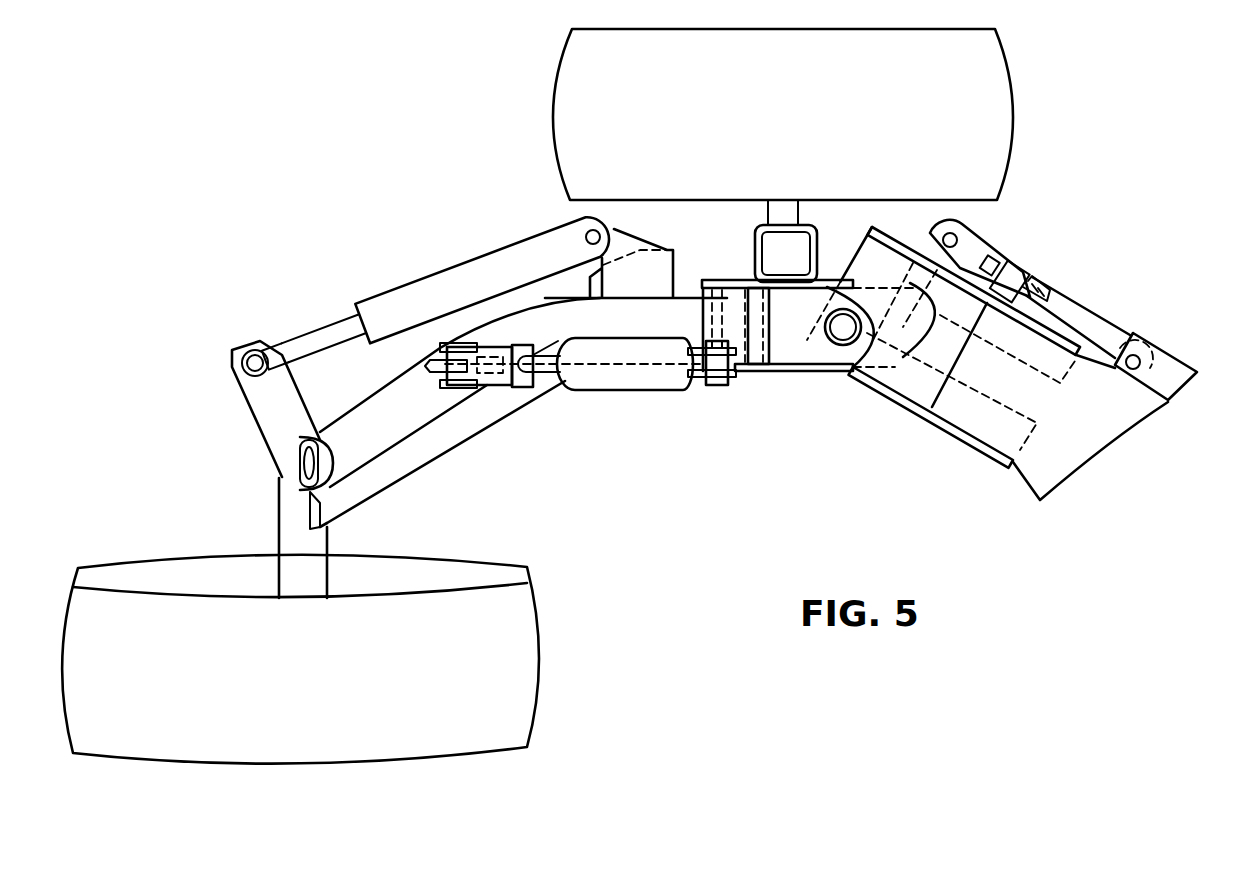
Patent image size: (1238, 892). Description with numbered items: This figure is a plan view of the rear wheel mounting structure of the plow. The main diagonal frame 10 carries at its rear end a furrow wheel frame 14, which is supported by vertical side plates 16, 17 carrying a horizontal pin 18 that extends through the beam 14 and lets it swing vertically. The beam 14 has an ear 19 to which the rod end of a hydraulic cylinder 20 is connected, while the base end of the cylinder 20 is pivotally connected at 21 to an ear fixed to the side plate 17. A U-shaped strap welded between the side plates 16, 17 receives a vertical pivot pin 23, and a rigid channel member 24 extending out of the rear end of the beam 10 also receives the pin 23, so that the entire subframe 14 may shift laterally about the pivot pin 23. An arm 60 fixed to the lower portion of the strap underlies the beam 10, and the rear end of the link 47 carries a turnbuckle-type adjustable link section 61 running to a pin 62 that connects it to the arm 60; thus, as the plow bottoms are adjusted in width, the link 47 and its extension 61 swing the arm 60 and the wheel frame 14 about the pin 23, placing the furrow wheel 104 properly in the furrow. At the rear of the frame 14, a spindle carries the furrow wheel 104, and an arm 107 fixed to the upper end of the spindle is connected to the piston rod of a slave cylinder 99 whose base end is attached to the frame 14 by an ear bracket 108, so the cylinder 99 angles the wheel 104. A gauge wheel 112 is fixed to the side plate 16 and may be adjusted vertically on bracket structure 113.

The frame 10 is at (1112, 422).
The furrow wheel frame 14 is at (447, 430).
The vertical side plate 16 is at (710, 278).
The vertical side plate 17 is at (793, 373).
The horizontal pin 18 is at (765, 374).
The ear 19 is at (427, 366).
The hydraulic cylinder 20 is at (610, 380).
The pivotal connection 21 is at (720, 380).
The pivot pin 23 is at (843, 333).
The rigid channel member 24 is at (950, 417).
The link 47 is at (1173, 365).
The arm 60 is at (970, 227).
The adjustable link section 61 is at (1017, 264).
The pin 62 is at (948, 233).
The slave cylinder 99 is at (432, 285).
The furrow wheel 104 is at (523, 627).
The arm 107 is at (262, 419).
The ear bracket 108 is at (628, 235).
The gauge wheel 112 is at (988, 57).
The bracket structure 113 is at (812, 225).